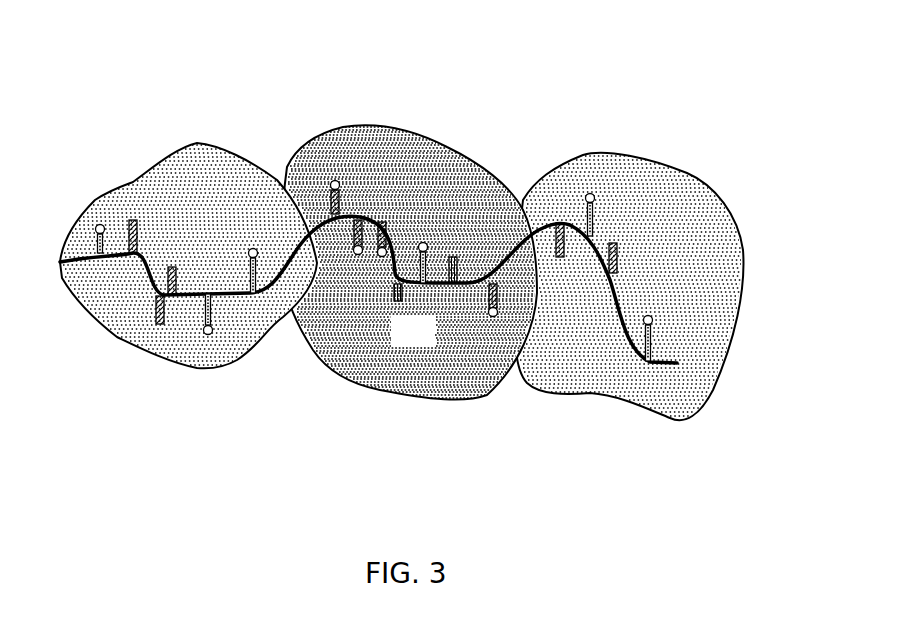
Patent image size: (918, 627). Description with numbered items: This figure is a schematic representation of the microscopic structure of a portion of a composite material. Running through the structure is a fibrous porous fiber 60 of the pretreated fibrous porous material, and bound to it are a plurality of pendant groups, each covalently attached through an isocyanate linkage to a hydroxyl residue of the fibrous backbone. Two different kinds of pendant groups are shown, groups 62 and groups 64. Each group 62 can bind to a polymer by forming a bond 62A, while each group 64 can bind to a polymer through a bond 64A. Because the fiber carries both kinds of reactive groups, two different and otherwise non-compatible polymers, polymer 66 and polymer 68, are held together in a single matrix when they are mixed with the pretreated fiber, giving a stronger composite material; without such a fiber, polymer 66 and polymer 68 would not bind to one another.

The fibrous porous fiber 60 is at (527, 240).
The pendant group 62 is at (657, 347).
The bond 62A is at (657, 320).
The pendant group 64 is at (620, 250).
The bond 64A is at (360, 257).
The polymer 66 is at (401, 272).
The polymer 68 is at (427, 342).